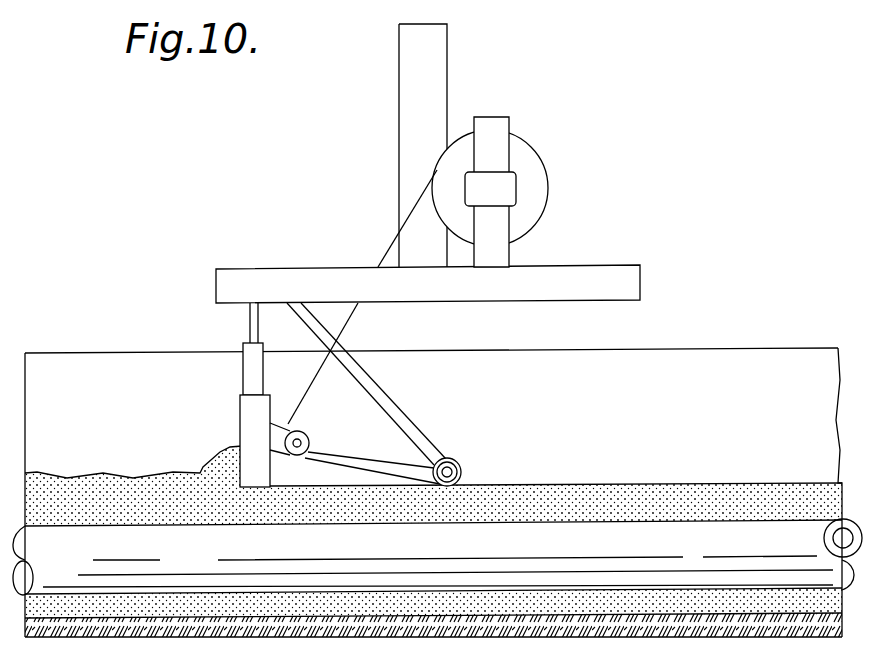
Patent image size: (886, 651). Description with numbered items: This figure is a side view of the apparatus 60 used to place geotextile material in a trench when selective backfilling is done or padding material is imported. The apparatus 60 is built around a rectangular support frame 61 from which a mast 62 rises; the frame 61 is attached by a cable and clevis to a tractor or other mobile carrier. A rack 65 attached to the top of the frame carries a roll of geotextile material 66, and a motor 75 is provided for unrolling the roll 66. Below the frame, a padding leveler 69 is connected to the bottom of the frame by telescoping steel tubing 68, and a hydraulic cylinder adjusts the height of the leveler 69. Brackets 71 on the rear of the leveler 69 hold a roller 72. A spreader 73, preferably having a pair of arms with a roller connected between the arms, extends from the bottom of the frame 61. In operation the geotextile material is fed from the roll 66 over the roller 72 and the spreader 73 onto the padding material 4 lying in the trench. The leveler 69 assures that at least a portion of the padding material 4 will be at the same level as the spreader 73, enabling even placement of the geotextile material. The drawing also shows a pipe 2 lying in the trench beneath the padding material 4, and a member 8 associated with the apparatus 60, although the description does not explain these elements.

The pipe 2 is at (675, 547).
The padding material 4 is at (567, 492).
The boom 8 is at (403, 200).
The apparatus 60 is at (315, 222).
The rectangular support frame 61 is at (597, 277).
The mast 62 is at (398, 79).
The rack 65 is at (487, 122).
The roll of geotextile material 66 is at (533, 160).
The telescoping steel tubing 68 is at (250, 365).
The padding leveler 69 is at (250, 410).
The brackets 71 is at (280, 440).
The roller 72 is at (313, 450).
The spreader 73 is at (367, 380).
The motor 75 is at (507, 188).